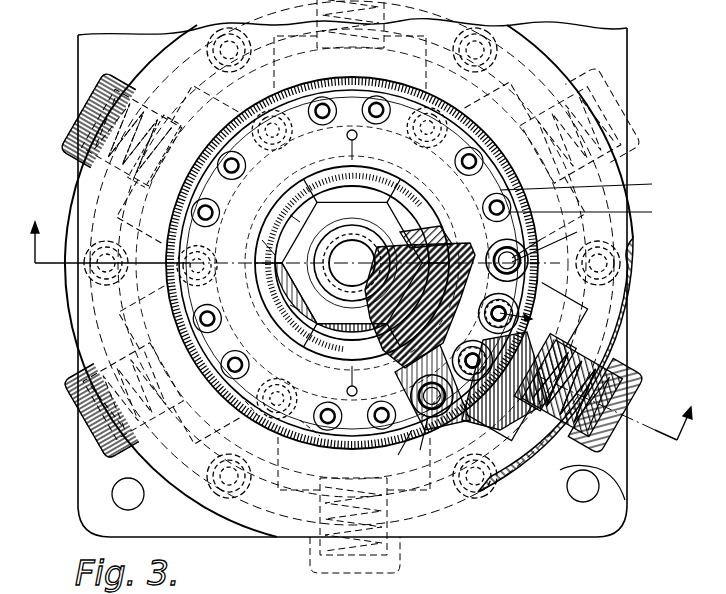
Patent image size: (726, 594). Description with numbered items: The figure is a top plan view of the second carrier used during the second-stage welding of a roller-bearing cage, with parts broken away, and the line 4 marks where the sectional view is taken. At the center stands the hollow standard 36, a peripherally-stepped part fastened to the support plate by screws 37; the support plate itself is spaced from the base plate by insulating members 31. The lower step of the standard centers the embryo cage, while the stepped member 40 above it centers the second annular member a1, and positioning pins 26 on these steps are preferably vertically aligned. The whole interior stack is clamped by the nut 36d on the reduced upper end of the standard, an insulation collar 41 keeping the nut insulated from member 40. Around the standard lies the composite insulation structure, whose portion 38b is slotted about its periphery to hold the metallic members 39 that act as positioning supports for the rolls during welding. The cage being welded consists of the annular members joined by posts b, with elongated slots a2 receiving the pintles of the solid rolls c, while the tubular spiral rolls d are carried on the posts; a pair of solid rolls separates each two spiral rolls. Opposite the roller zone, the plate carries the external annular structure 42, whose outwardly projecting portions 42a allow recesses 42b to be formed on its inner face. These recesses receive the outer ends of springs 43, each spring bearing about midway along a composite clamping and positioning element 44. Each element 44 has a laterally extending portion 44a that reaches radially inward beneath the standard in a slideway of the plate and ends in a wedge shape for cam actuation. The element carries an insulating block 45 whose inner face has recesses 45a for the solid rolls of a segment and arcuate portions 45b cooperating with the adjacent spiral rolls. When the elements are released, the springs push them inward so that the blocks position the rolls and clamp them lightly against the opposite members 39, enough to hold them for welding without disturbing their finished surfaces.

The section line 4- 4 is at (361, 322).
The positioning pins 26 is at (352, 160).
The insulating members 31 is at (283, 262).
The hollow standard 36 is at (428, 228).
The nut 36d is at (352, 240).
The screws 37 is at (352, 263).
The insulation portion 38b is at (470, 188).
The metallic members 39 is at (380, 448).
The stepped member 40 is at (308, 428).
The insulation collar 41 is at (265, 239).
The external annular structure 42 is at (630, 280).
The projecting portions 42a is at (85, 398).
The recesses 42b is at (618, 457).
The springs 43 is at (80, 450).
The clamping and positioning element 44 is at (120, 362).
The laterally extending portion 44a is at (438, 228).
The insulating block 45 is at (140, 338).
The recesses 45a is at (512, 305).
The arcuate portions 45b is at (531, 262).
The annular member a1 is at (585, 185).
The elongated slots a2 is at (590, 213).
The posts b is at (490, 345).
The solid rolls c is at (525, 318).
The spiral rolls d is at (483, 345).